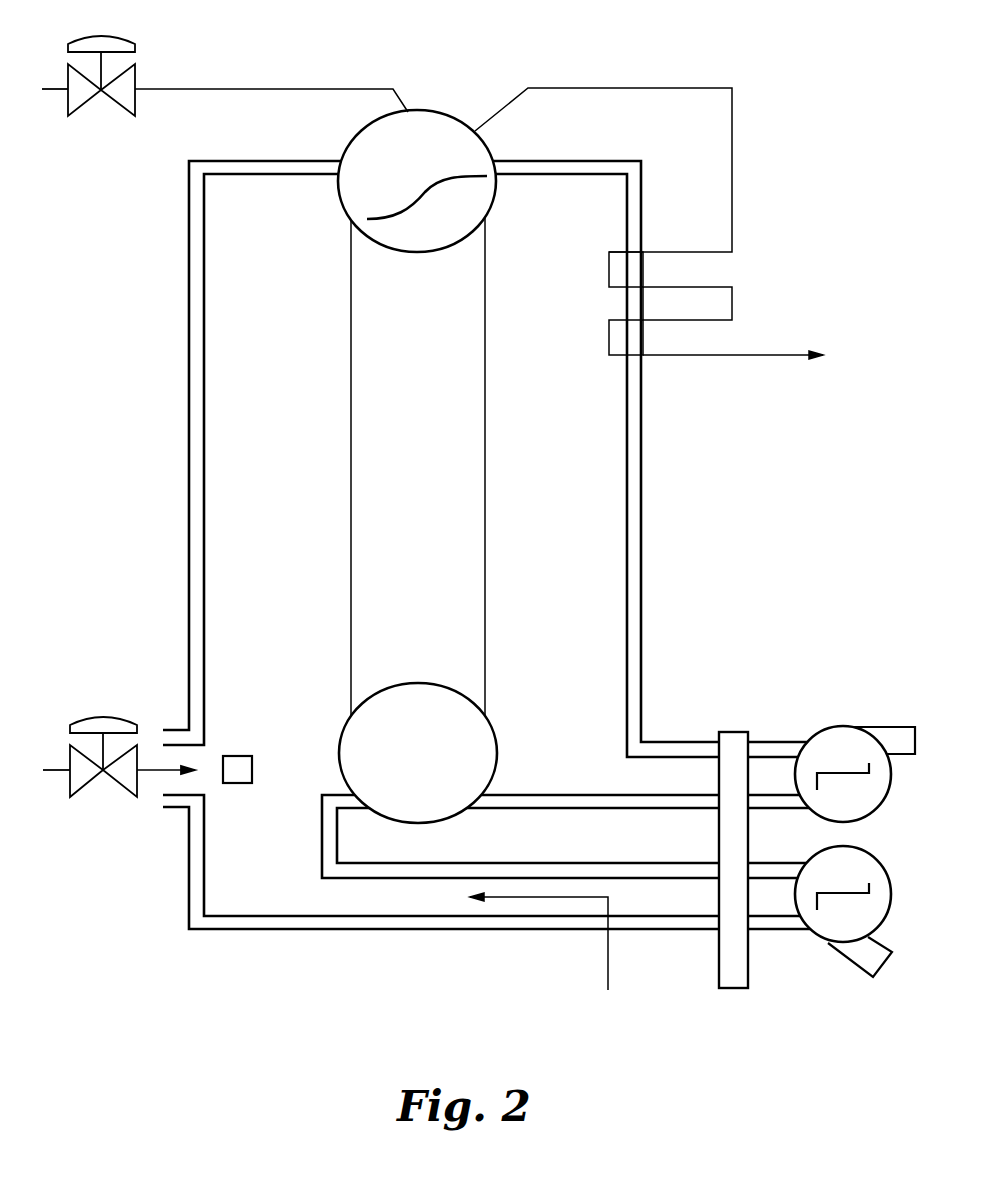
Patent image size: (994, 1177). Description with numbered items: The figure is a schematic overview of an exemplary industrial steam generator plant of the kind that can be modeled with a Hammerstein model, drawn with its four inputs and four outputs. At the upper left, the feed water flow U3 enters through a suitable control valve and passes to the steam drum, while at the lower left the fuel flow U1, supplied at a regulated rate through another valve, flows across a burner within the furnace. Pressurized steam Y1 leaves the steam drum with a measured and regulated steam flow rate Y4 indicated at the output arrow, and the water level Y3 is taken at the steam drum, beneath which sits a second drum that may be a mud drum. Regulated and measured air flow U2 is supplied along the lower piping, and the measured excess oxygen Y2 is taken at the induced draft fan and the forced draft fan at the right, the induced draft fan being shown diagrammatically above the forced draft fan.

The fuel flow U1 is at (119, 742).
The air flow U2 is at (544, 963).
The feed water flow U3 is at (225, 60).
The pressurized steam Y1 is at (603, 143).
The measured excess oxygen Y2 is at (733, 837).
The water level Y3 is at (445, 181).
The steam flow rate Y4 is at (716, 305).